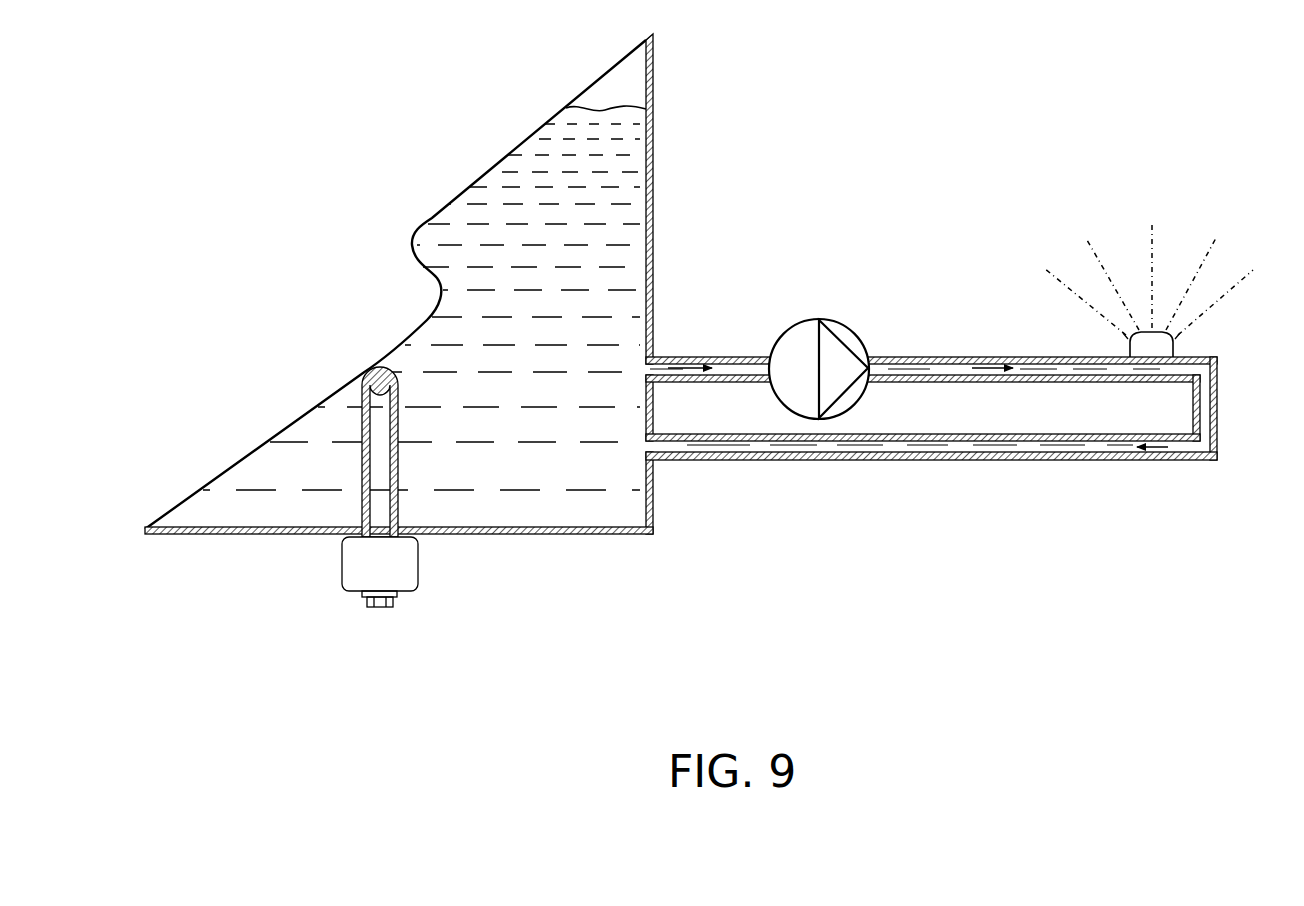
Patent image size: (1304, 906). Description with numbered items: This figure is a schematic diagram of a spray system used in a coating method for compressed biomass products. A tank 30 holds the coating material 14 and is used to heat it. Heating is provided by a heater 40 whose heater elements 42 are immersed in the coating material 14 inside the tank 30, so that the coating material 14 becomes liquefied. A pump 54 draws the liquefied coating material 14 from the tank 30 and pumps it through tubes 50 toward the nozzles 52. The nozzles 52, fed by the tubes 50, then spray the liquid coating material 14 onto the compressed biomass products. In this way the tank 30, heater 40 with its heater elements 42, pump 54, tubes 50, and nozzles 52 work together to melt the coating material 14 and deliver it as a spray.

The coating material 14 is at (552, 263).
The tank 30 is at (655, 125).
The heater 40 is at (342, 563).
The heater elements 42 is at (397, 429).
The tubes 50 is at (1217, 397).
The nozzles 52 is at (1163, 346).
The pump 54 is at (817, 318).